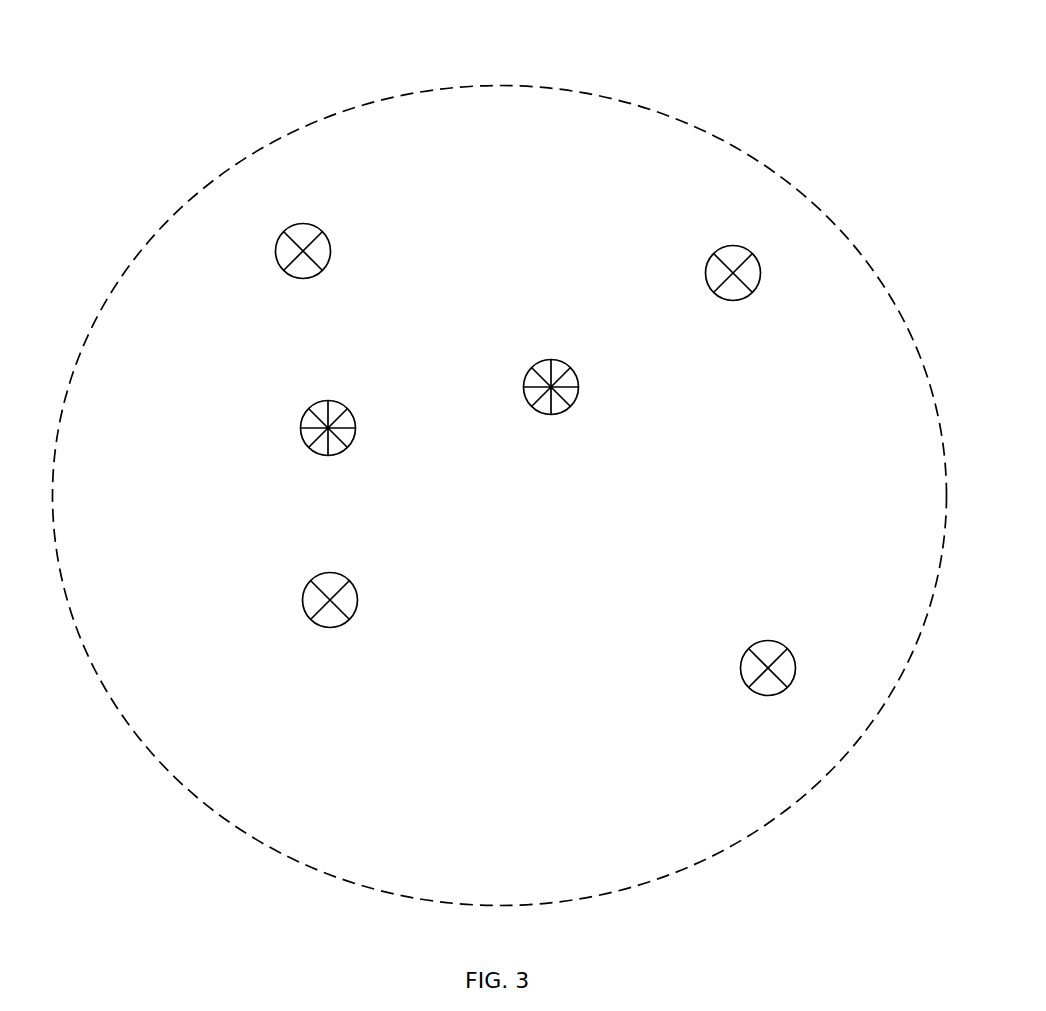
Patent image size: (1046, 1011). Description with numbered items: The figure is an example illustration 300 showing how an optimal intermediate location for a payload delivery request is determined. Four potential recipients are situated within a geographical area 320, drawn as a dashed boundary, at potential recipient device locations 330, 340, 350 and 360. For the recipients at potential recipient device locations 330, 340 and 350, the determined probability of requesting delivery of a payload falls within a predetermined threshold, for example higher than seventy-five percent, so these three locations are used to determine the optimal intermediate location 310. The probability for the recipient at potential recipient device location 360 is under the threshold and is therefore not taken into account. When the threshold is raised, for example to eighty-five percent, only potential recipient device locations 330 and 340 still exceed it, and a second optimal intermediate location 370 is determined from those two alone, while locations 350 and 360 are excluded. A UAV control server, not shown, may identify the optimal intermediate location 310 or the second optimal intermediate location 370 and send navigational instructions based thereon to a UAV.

The example illustration 300 is at (350, 76).
The optimal intermediate location 310 is at (578, 387).
The geographical area 320 is at (617, 100).
The potential recipient device location 330 is at (276, 254).
The potential recipient device location 340 is at (757, 293).
The potential recipient device location 350 is at (305, 603).
The potential recipient device location 360 is at (767, 695).
The second optimal intermediate location 370 is at (301, 427).